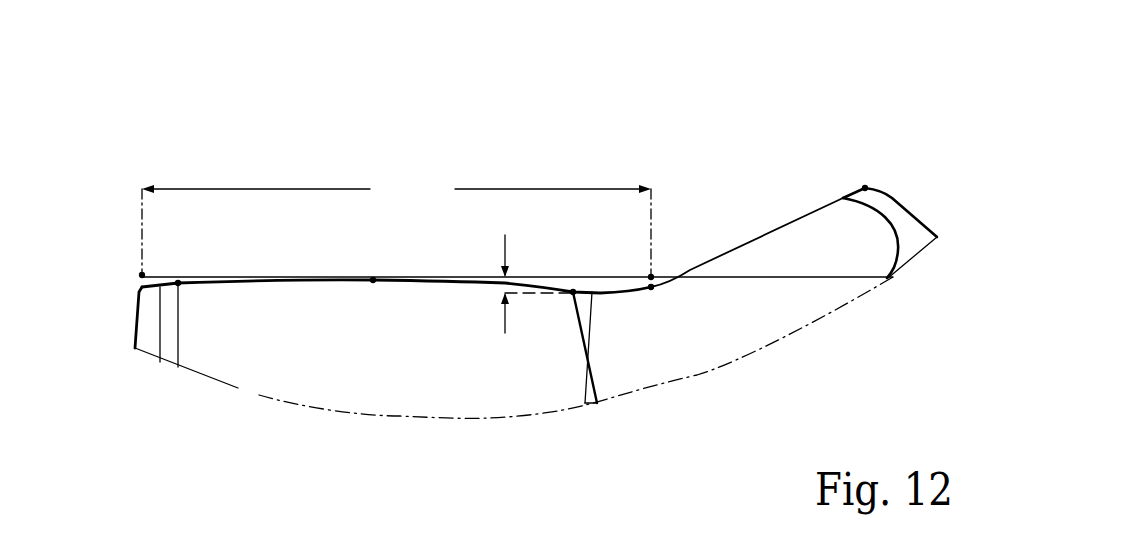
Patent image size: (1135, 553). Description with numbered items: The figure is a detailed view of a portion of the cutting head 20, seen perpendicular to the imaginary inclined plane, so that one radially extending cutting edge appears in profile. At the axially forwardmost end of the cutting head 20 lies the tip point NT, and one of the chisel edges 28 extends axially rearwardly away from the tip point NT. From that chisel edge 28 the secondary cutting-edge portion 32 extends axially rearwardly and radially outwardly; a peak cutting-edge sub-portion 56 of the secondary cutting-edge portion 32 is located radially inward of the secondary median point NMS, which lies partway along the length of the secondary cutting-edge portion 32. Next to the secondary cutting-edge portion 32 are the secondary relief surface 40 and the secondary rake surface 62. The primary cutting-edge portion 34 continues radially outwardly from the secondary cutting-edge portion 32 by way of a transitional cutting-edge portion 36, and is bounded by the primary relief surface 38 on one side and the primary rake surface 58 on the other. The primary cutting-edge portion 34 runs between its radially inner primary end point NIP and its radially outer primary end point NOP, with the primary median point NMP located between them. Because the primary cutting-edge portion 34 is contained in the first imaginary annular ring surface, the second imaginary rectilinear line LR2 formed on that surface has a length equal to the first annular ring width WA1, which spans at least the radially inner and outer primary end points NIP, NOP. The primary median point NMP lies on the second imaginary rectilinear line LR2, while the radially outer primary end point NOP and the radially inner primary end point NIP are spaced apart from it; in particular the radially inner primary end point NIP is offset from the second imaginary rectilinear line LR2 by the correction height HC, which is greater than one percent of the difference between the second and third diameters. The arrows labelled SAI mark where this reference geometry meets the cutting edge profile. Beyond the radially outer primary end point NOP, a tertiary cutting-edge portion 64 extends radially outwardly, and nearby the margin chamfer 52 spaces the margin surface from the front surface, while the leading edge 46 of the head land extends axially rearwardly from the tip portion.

The cutting head 20 is at (826, 128).
The chisel edge 28 is at (883, 192).
The secondary cutting-edge portion 32 is at (623, 291).
The primary cutting-edge portion 34 is at (243, 287).
The transitional cutting-edge portion 36 is at (578, 293).
The primary relief surface 38 is at (203, 287).
The secondary relief surface 40 is at (632, 288).
The leading edge 46 is at (135, 323).
The margin chamfer 52 is at (140, 297).
The peak cutting-edge sub-portion 56 is at (700, 267).
The primary rake surface 58 is at (384, 357).
The secondary rake surface 62 is at (649, 357).
The tertiary cutting-edge portion 64 is at (155, 288).
The first annular ring width WA1 is at (396, 226).
The primary median point NMP is at (373, 280).
The correction height HC is at (529, 273).
The second imaginary rectilinear line LR2 is at (556, 272).
The suction side intersection SAI is at (577, 272).
The tip point NT is at (866, 187).
The radially outer primary end point NOP is at (178, 283).
The radially inner primary end point NIP is at (573, 292).
The secondary median point NMS is at (651, 287).